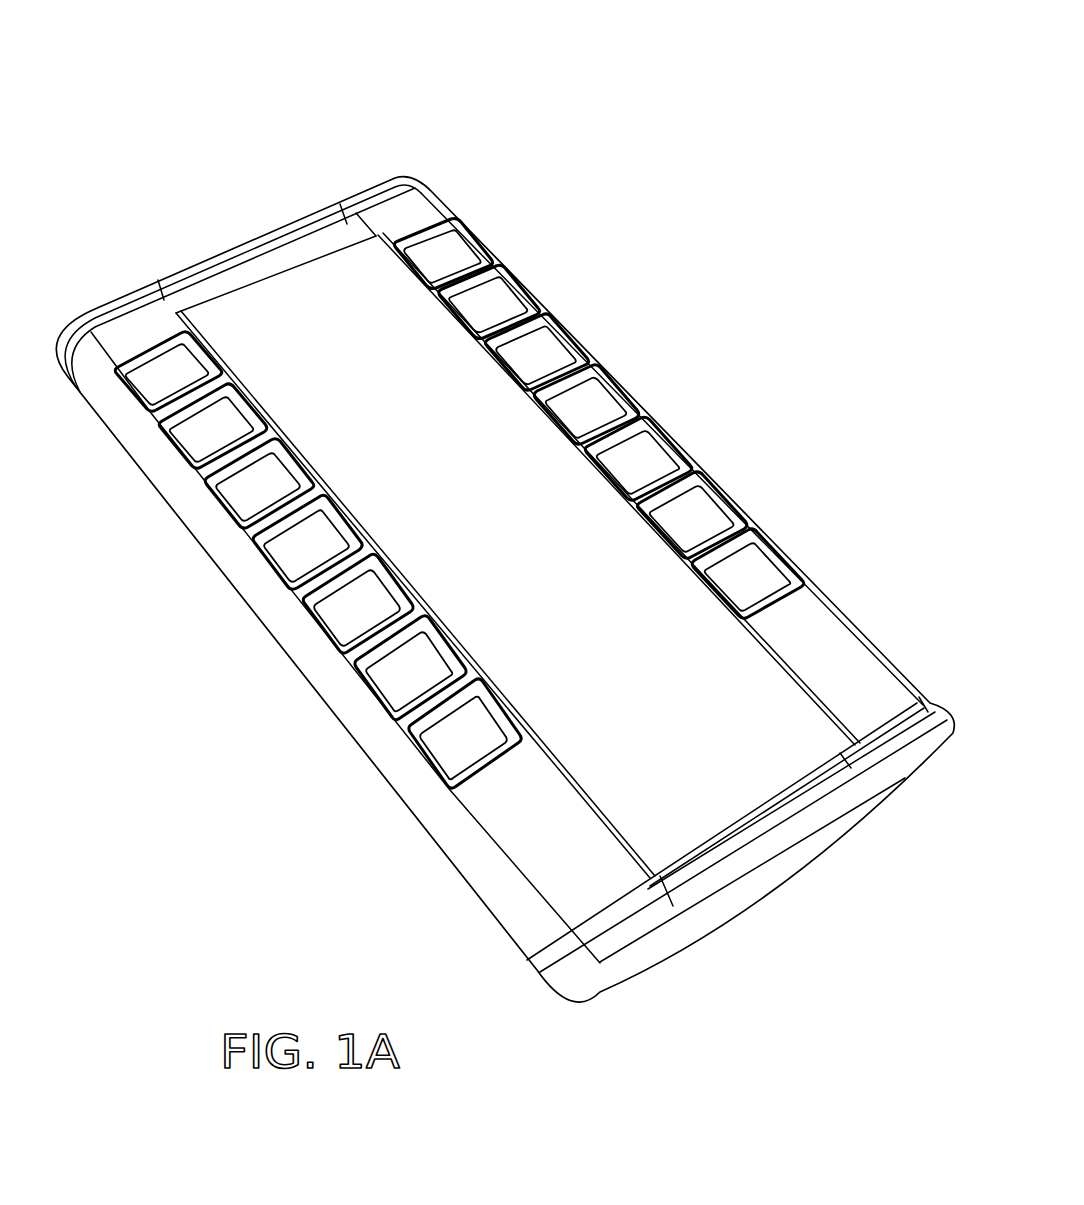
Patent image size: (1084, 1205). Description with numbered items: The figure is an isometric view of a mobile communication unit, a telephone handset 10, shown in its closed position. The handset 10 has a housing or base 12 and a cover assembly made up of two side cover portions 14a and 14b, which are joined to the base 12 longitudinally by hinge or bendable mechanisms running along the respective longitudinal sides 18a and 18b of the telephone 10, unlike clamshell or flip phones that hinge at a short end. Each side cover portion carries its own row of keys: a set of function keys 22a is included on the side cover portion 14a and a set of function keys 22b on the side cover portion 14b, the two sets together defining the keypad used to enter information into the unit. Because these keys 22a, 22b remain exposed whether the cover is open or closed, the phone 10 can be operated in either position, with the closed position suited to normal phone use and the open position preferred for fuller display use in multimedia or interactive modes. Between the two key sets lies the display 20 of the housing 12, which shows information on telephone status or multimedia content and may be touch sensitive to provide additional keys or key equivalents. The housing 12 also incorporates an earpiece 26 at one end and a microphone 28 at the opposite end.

The telephone handset 10 is at (260, 85).
The housing 12 is at (197, 265).
The side cover portion 14a is at (180, 482).
The side cover portion 14b is at (692, 460).
The longitudinal side 18a is at (270, 688).
The longitudinal side 18b is at (817, 530).
The display 20 is at (460, 508).
The function keys 22a is at (463, 730).
The function keys 22b is at (723, 590).
The earpiece 26 is at (253, 250).
The microphone 28 is at (797, 850).